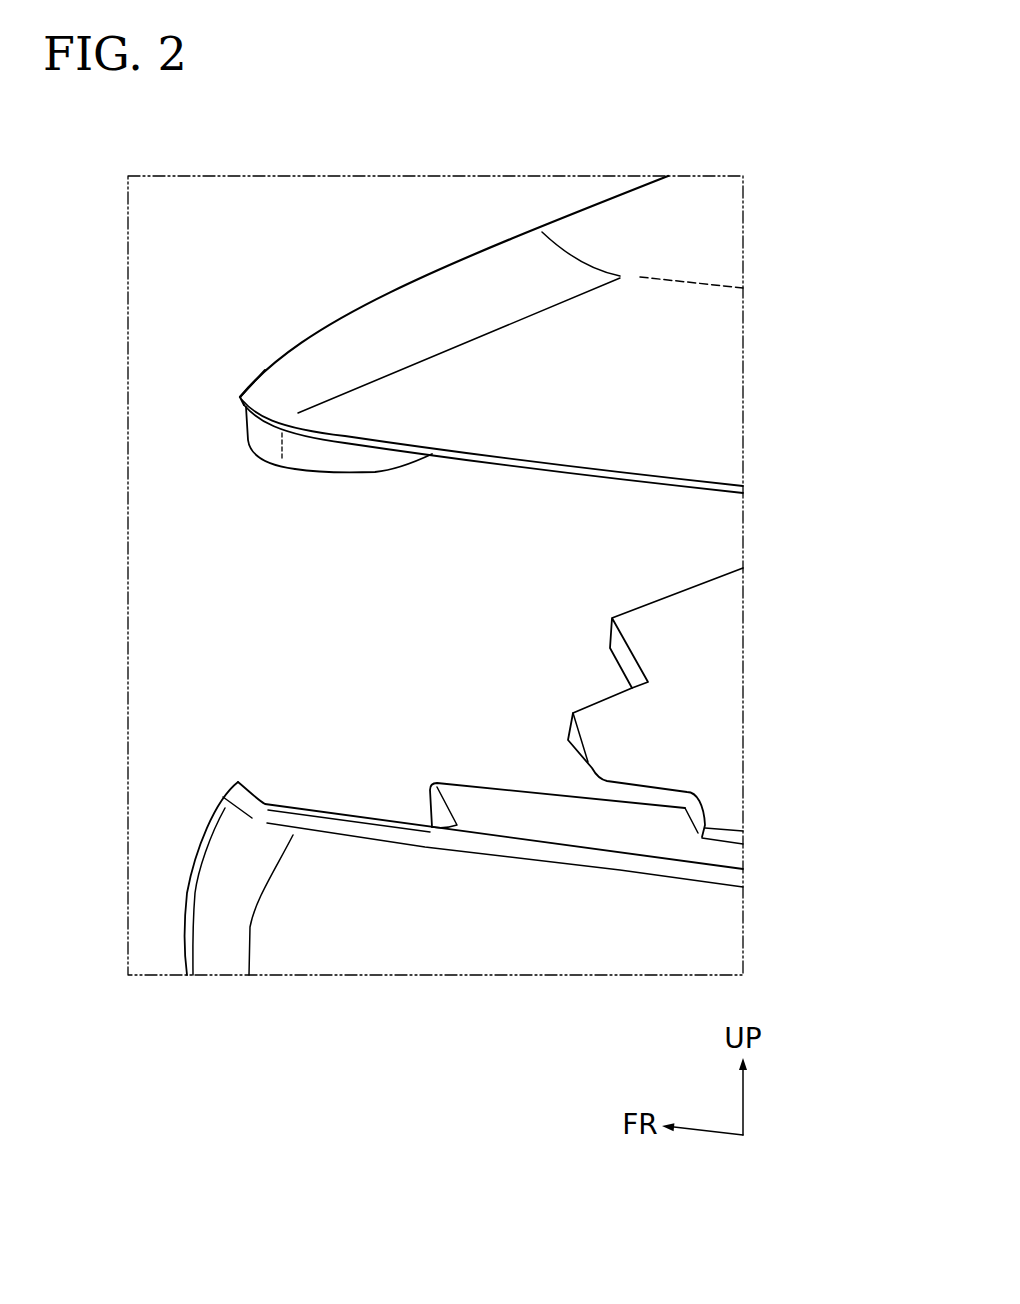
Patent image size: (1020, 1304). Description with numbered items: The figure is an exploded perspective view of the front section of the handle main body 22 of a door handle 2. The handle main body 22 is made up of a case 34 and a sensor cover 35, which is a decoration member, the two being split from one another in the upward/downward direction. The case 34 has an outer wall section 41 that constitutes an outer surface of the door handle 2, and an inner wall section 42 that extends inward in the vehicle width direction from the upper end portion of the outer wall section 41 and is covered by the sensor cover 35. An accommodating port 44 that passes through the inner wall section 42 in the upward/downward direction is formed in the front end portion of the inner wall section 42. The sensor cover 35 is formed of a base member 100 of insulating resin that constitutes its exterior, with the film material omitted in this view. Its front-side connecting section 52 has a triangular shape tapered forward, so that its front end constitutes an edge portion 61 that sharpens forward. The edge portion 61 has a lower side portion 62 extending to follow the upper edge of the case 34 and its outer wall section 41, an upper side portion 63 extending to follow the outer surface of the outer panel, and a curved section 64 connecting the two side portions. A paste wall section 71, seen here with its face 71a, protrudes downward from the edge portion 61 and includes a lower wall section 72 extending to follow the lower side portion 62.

The door handle 2 is at (665, 138).
The handle main body 22 is at (498, 212).
The case 34 is at (514, 814).
The sensor cover 35 is at (536, 345).
The outer wall section 41 is at (552, 947).
The inner wall section 42 is at (519, 766).
The accommodating port 44 is at (428, 810).
The front-side connecting section 52 is at (536, 345).
The edge portion 61 is at (433, 308).
The lower side portion 62 is at (508, 470).
The upper side portion 63 is at (295, 357).
The curved section 64 is at (360, 363).
The paste wall section 71 is at (331, 504).
The front face of protrusion 71a is at (305, 450).
The lower wall section 72 is at (372, 462).
The base member 100 is at (708, 305).